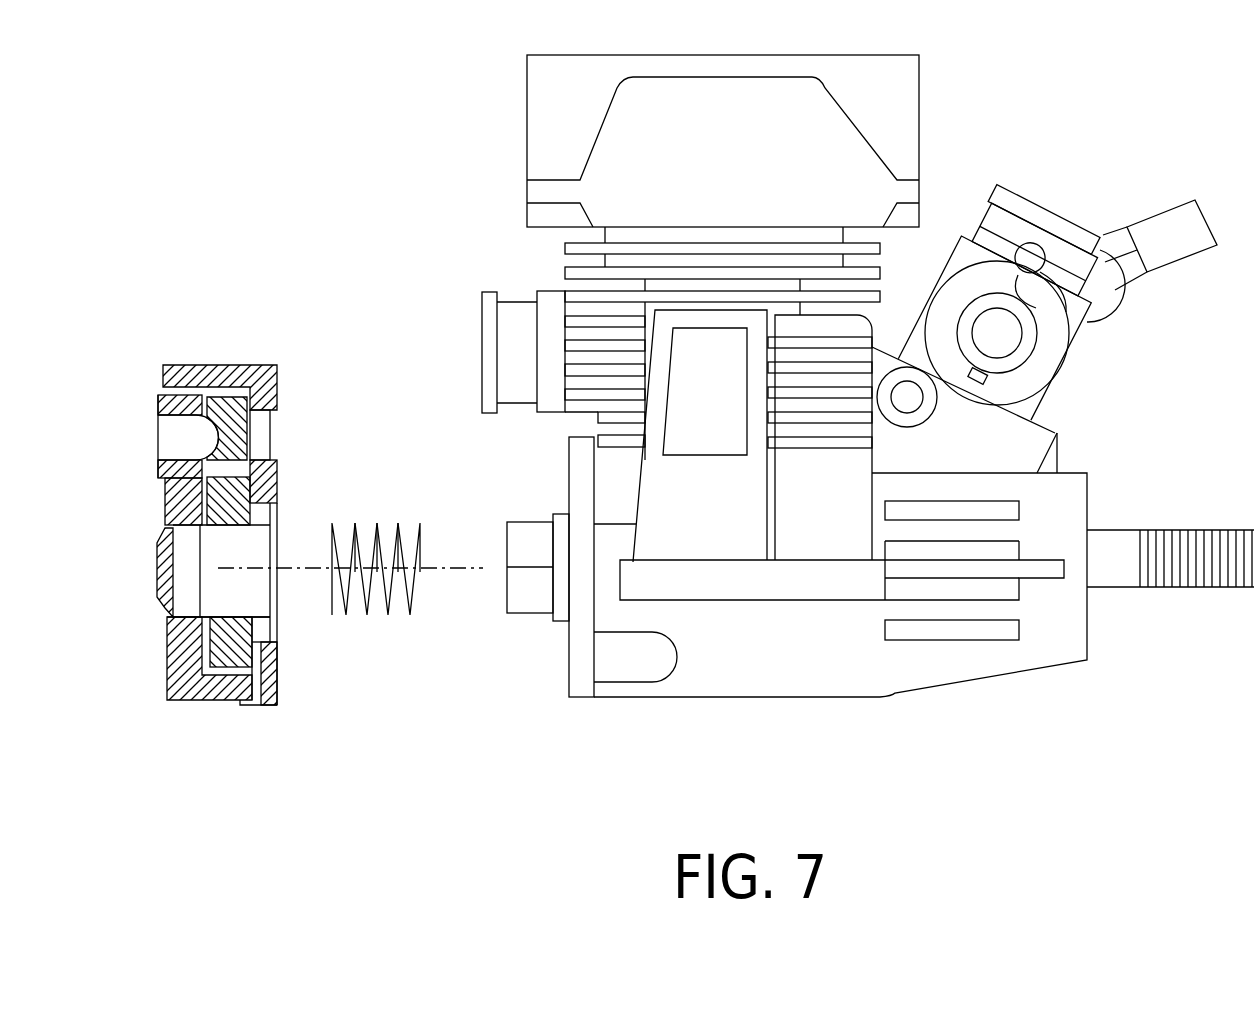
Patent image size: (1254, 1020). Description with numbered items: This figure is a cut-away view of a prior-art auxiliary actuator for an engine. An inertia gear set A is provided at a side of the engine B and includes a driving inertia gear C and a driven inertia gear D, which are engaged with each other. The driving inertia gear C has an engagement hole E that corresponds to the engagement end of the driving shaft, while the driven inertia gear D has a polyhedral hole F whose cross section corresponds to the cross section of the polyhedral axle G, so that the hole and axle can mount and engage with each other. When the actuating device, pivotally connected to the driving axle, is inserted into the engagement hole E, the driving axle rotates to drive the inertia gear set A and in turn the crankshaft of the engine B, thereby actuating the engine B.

The inertia gear set A is at (300, 381).
The engine B is at (1014, 126).
The driving inertia gear C is at (158, 415).
The driven inertia gear D is at (228, 678).
The engagement hole E is at (183, 438).
The polyhedral hole F is at (228, 617).
The polyhedral axle G is at (530, 598).